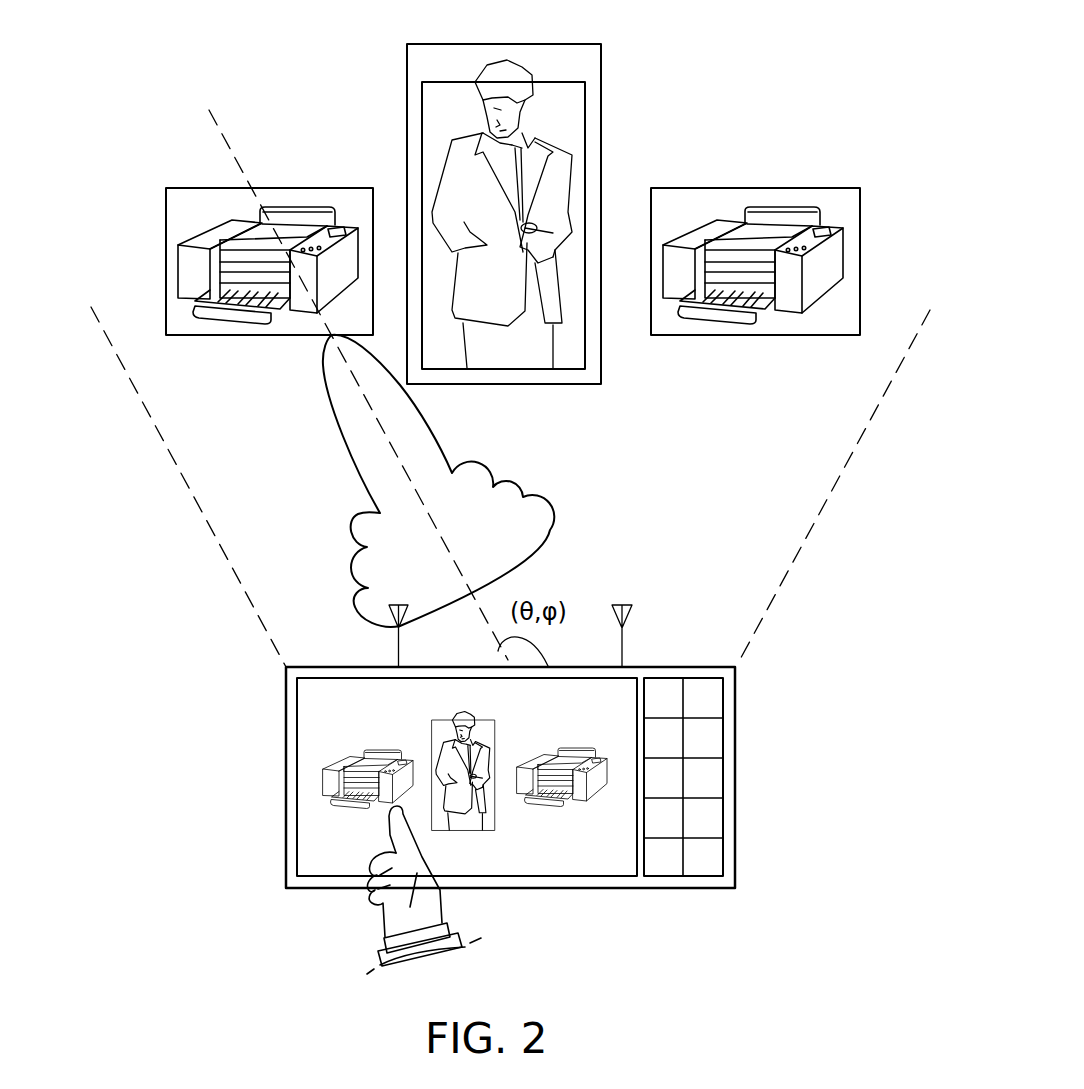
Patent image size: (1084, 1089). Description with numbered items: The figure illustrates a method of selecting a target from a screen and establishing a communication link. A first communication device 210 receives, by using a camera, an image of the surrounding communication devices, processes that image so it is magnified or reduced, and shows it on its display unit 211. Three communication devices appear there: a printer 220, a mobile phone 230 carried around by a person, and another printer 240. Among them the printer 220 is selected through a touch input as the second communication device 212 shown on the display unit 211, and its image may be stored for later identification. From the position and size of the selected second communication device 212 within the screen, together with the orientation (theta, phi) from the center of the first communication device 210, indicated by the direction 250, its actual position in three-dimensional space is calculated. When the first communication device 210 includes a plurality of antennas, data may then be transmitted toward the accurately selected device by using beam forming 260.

The first communication device 210 is at (454, 764).
The display unit 211 is at (412, 777).
The second communication device 212 is at (340, 803).
The printer 220 is at (166, 210).
The mobile phone 230 is at (407, 84).
The another printer 240 is at (800, 188).
The pointing direction line 250 is at (229, 150).
The beam forming 260 is at (334, 438).